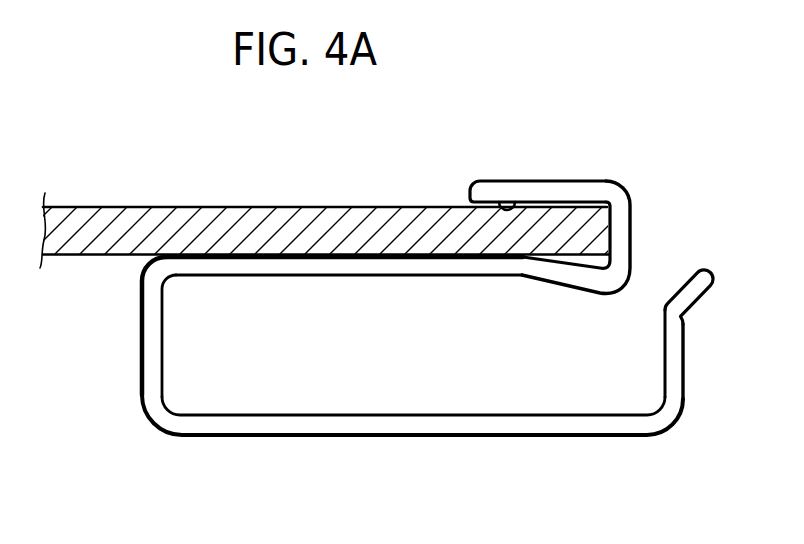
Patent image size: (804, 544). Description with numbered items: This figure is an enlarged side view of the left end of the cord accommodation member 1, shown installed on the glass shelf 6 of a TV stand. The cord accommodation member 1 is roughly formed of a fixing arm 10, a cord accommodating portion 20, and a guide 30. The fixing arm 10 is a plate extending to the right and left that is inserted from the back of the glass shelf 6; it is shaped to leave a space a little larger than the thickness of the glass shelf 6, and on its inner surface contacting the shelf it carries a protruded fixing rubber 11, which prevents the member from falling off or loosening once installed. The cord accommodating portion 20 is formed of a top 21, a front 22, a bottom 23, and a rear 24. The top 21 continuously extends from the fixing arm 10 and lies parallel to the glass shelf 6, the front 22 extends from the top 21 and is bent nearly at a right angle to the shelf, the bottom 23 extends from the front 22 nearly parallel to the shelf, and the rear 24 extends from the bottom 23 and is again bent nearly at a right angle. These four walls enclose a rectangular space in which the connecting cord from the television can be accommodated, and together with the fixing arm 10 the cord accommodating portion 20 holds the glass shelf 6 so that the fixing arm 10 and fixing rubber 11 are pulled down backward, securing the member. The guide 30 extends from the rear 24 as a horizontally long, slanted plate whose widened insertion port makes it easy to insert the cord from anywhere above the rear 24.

The cord accommodation member 1 is at (411, 313).
The glass shelf 6 is at (101, 227).
The fixing arm 10 is at (620, 183).
The fixing rubber 11 is at (507, 202).
The cord accommodating portion 20 is at (642, 438).
The top 21 is at (287, 277).
The front 22 is at (140, 340).
The bottom 23 is at (477, 437).
The rear 24 is at (685, 347).
The guide 30 is at (706, 270).